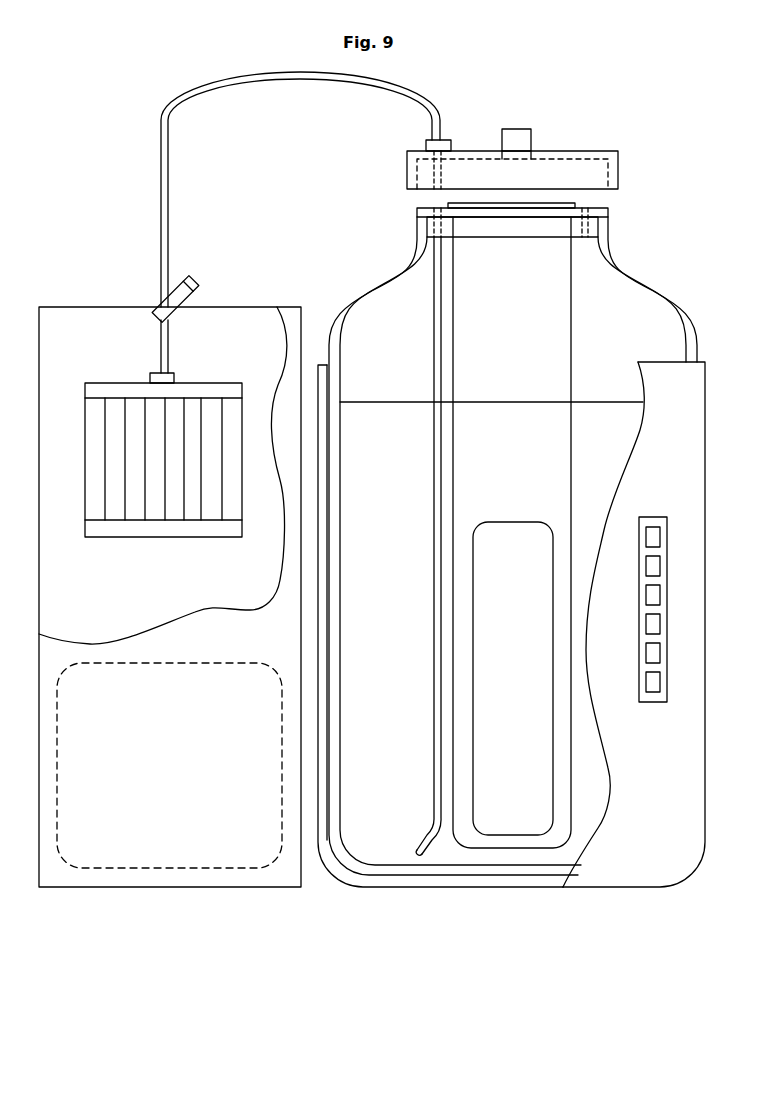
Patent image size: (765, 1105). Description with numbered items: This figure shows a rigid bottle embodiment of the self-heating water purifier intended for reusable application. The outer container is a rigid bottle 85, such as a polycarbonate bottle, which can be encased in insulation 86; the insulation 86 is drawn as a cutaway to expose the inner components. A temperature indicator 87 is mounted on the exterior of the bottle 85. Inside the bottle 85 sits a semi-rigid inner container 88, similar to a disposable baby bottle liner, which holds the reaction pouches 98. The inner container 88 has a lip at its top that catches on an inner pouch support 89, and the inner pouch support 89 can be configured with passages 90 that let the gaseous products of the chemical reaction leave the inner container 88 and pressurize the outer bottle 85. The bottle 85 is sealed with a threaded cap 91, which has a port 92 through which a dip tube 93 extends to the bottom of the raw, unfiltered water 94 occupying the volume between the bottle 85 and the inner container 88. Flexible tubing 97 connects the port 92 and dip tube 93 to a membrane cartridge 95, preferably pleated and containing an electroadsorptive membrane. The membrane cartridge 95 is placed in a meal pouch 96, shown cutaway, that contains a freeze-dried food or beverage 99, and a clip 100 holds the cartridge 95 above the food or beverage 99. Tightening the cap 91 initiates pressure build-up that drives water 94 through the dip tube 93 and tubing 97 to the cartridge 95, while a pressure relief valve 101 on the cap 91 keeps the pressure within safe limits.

The rigid bottle 85 is at (385, 258).
The insulation 86 is at (603, 887).
The temperature indicator 87 is at (653, 702).
The inner container 88 is at (572, 368).
The inner pouch support 89 is at (577, 238).
The passages 90 is at (587, 207).
The threaded cap 91 is at (618, 168).
The port 92 is at (426, 143).
The dip tube 93 is at (435, 730).
The raw, unfiltered water 94 is at (358, 400).
The membrane cartridge 95 is at (200, 383).
The meal pouch 96 is at (58, 307).
The flexible tubing 97 is at (167, 203).
The reaction pouches 98 is at (493, 522).
The freeze-dried food or beverage 99 is at (104, 868).
The clip 100 is at (192, 276).
The pressure relief valve 101 is at (517, 130).